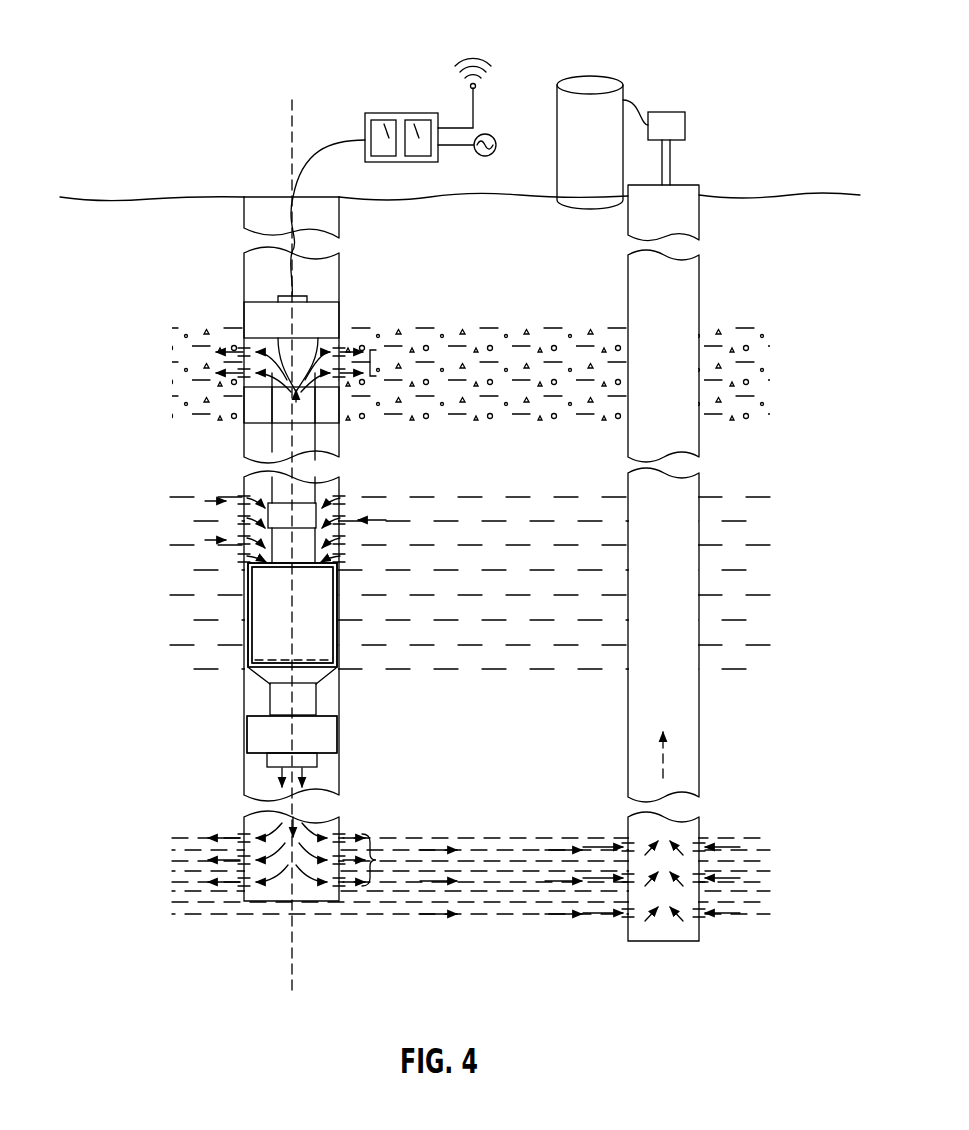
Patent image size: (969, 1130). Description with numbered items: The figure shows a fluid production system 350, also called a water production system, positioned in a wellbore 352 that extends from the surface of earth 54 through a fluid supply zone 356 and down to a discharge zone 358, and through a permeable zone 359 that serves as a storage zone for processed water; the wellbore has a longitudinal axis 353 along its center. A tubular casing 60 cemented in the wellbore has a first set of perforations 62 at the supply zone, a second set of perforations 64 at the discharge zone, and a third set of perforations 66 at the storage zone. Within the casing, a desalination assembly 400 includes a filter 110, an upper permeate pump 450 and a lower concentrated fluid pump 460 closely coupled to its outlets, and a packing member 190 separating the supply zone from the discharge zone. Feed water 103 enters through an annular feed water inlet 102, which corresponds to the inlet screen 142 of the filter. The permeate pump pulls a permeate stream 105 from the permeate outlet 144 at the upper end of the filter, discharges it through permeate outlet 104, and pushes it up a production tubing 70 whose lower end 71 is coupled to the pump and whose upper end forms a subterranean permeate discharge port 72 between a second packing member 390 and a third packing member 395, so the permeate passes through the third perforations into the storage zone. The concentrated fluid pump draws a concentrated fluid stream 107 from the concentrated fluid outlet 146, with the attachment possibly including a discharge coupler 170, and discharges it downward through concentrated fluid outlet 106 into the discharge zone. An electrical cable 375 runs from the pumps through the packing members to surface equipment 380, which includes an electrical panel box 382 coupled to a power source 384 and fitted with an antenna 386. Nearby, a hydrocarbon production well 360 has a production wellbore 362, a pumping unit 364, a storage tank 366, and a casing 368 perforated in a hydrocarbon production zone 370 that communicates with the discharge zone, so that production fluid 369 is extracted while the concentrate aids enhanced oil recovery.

The surface of earth 54 is at (135, 197).
The tubular casing 60 is at (339, 218).
The first set of perforations 62 is at (240, 538).
The second set of perforations 64 is at (200, 901).
The third set of perforations 66 is at (244, 352).
The production tubing 70 is at (257, 405).
The lower end of production tubing 71 is at (318, 504).
The subterranean permeate discharge port 72 is at (278, 340).
The annular feed water inlet 102 is at (337, 582).
The inlet screen 142 is at (292, 615).
The feed water 103 is at (345, 497).
The permeate outlet 104 is at (339, 425).
The permeate stream 105 is at (304, 372).
The concentrated fluid outlet 106 is at (313, 759).
The concentrated fluid stream 107 is at (268, 831).
The filter 110 is at (312, 625).
The permeate outlet of filter 144 is at (248, 576).
The concentrated fluid outlet of filter 146 is at (268, 682).
The discharge coupler 170 is at (300, 676).
The packing member 190 is at (320, 736).
The fluid production system 350 is at (362, 60).
The wellbore 352 is at (243, 222).
The longitudinal axis 353 is at (292, 955).
The fluid supply zone 356 is at (530, 561).
The discharge zone 358 is at (373, 848).
The permeable zone 359 is at (490, 374).
The hydrocarbon production well 360 is at (610, 482).
The production wellbore 362 is at (627, 212).
The pumping unit 364 is at (672, 122).
The storage tank 366 is at (590, 88).
The casing of production wellbore 368 is at (690, 205).
The production fluid 369 is at (667, 756).
The hydrocarbon production zone 370 is at (598, 850).
The electrical cable 375 is at (291, 196).
The surface equipment 380 is at (458, 100).
The electrical panel box 382 is at (398, 165).
The power source 384 is at (487, 158).
The antenna 386 is at (478, 110).
The second packing member 390 is at (244, 373).
The third packing member 395 is at (335, 318).
The desalination assembly 400 is at (262, 633).
The permeate pump 450 is at (250, 452).
The concentrated fluid pump 460 is at (246, 723).